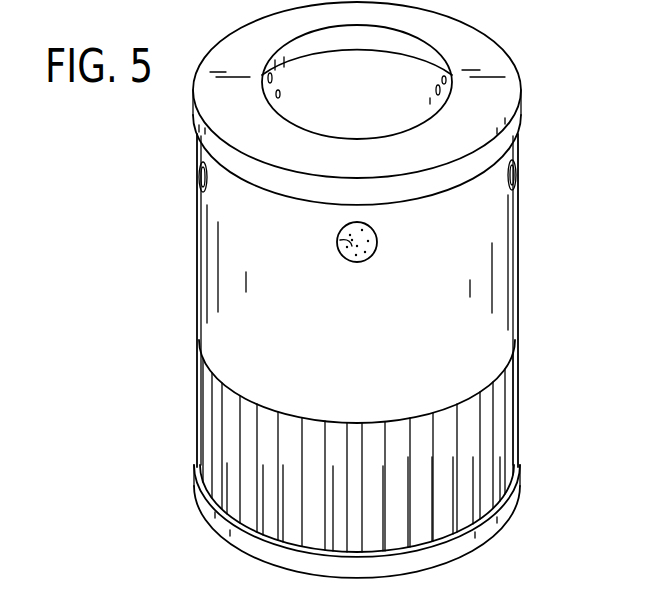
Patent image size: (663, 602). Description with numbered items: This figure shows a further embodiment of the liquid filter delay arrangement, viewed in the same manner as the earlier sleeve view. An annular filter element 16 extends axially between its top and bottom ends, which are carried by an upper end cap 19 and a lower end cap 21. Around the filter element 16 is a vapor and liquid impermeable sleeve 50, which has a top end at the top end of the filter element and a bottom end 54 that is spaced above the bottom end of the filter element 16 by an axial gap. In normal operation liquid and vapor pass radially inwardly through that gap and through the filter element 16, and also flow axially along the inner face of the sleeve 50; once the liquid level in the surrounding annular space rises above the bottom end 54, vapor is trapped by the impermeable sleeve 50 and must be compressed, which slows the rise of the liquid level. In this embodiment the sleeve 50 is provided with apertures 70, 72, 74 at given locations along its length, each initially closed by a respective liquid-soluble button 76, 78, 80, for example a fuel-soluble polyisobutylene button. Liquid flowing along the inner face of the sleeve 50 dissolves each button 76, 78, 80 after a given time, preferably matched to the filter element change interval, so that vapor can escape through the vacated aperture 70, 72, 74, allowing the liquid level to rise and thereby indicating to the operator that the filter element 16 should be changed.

The filter element 16 is at (214, 432).
The upper end cap 19 is at (510, 135).
The lower end cap 21 is at (510, 502).
The sleeve 50 is at (210, 313).
The bottom end 54 is at (473, 395).
The aperture 70 is at (200, 168).
The aperture 72 is at (345, 257).
The aperture 74 is at (516, 169).
The liquid-soluble button 76 is at (200, 185).
The liquid-soluble button 78 is at (365, 258).
The liquid-soluble button 80 is at (517, 183).